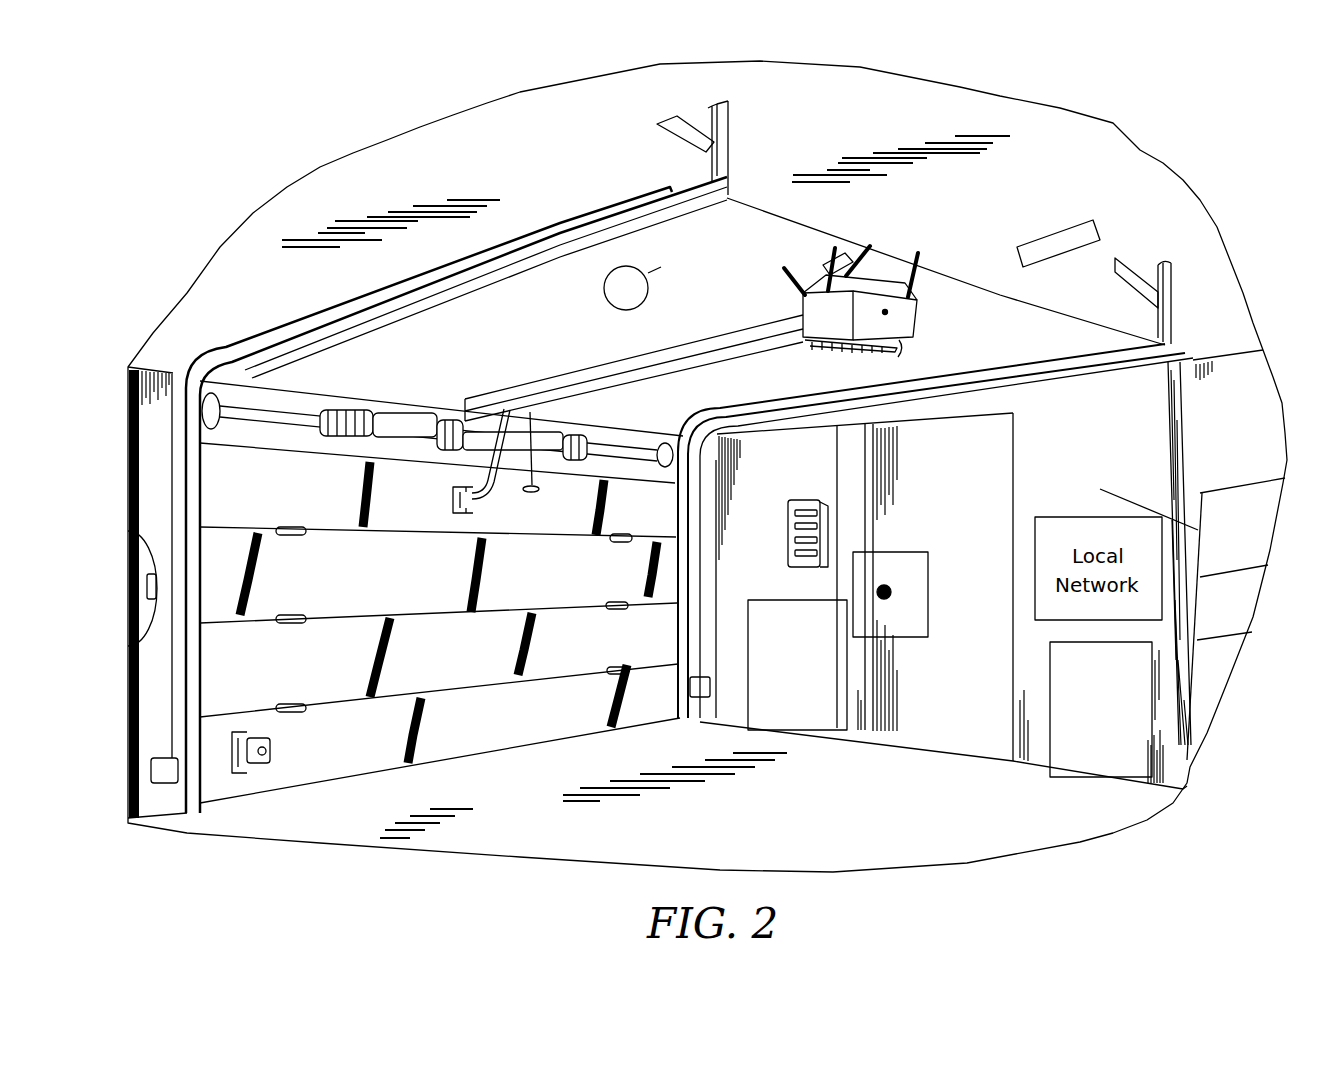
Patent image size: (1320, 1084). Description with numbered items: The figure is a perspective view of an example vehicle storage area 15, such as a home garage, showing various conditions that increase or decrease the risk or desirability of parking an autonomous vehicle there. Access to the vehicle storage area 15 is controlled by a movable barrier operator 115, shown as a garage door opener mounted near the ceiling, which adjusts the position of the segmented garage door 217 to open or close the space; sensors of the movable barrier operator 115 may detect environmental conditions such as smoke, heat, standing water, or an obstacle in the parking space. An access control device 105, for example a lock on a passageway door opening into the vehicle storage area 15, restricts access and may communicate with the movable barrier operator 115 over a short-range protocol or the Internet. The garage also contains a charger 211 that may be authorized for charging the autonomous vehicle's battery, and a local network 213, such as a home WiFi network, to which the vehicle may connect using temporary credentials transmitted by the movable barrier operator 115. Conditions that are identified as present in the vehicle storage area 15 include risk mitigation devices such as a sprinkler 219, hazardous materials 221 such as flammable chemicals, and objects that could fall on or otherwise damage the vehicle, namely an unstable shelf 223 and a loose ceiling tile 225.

The vehicle storage area 15 is at (1143, 124).
The access control device 105 is at (890, 639).
The movable barrier operator 115 is at (880, 272).
The charger 211 is at (768, 600).
The local network 213 is at (1035, 587).
The segmented garage door 217 is at (437, 587).
The sprinkler 219 is at (622, 311).
The hazardous materials 221 is at (1120, 713).
The unstable shelf 223 is at (1260, 547).
The loose ceiling tile 225 is at (1100, 229).